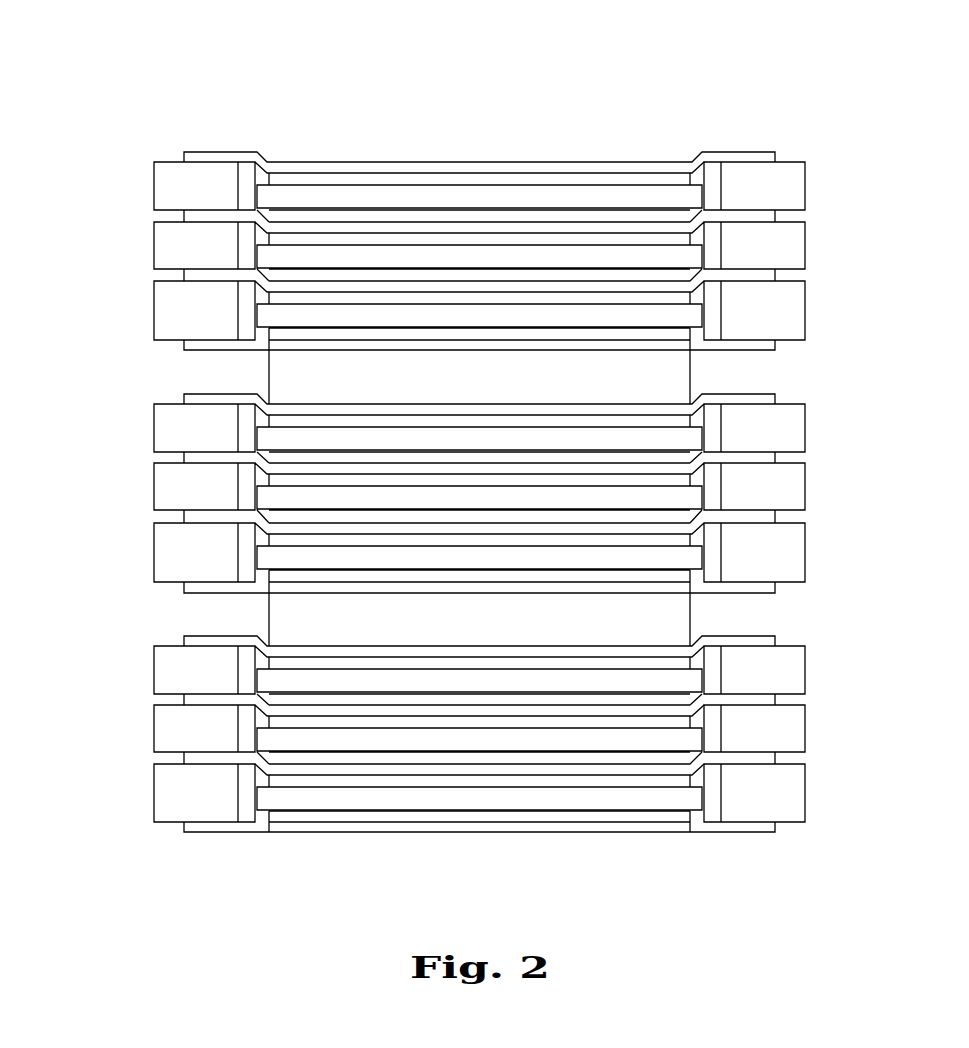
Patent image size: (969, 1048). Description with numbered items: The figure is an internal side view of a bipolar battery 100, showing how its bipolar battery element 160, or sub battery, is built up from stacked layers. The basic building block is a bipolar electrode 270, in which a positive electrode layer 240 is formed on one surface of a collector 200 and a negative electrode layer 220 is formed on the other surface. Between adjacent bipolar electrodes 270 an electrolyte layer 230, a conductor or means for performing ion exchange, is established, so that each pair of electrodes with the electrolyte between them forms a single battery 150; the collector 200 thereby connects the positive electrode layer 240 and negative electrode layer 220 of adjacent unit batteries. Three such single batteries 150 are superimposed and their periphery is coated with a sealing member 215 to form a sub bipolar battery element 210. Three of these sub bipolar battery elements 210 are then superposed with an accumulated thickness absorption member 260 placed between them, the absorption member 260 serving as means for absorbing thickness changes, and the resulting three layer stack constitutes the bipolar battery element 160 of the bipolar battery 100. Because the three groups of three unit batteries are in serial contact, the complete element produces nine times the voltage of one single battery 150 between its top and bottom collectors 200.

The bipolar battery 100 is at (92, 34).
The bipolar battery element 160 is at (174, 144).
The accumulated thickness absorption member 260 is at (549, 158).
The sealing member 215 is at (775, 192).
The sub bipolar battery element 210 is at (69, 633).
The single battery 150 is at (142, 751).
The bipolar electrode 270 is at (762, 748).
The positive electrode layer 240 is at (467, 782).
The electrolyte layer 230 is at (550, 800).
The negative electrode layer 220 is at (632, 817).
The collector 200 is at (735, 758).